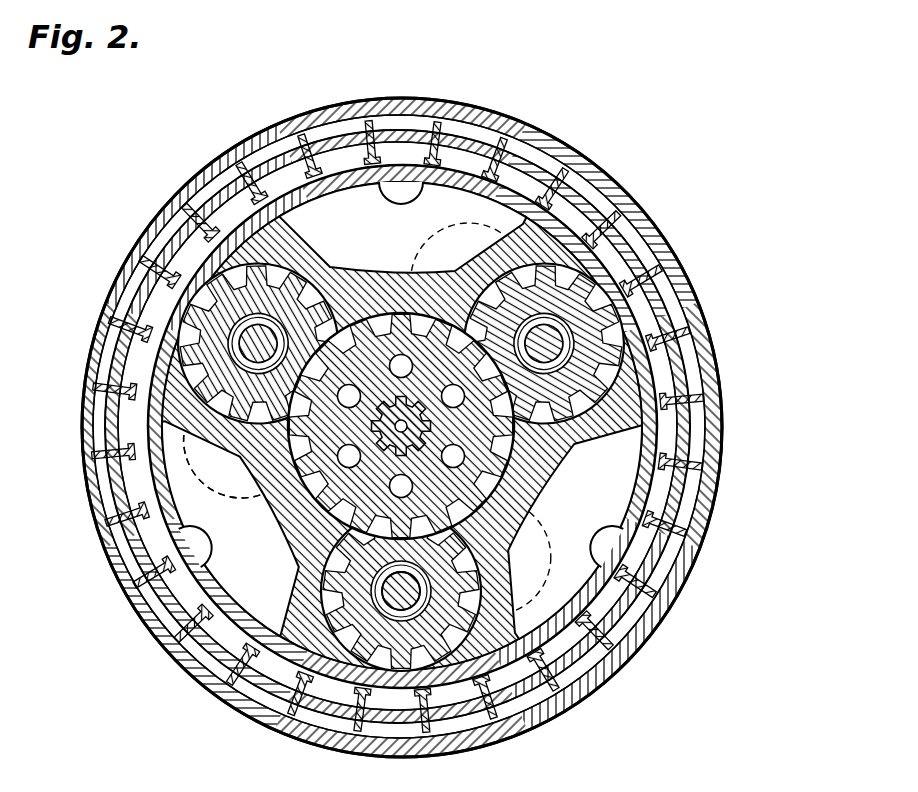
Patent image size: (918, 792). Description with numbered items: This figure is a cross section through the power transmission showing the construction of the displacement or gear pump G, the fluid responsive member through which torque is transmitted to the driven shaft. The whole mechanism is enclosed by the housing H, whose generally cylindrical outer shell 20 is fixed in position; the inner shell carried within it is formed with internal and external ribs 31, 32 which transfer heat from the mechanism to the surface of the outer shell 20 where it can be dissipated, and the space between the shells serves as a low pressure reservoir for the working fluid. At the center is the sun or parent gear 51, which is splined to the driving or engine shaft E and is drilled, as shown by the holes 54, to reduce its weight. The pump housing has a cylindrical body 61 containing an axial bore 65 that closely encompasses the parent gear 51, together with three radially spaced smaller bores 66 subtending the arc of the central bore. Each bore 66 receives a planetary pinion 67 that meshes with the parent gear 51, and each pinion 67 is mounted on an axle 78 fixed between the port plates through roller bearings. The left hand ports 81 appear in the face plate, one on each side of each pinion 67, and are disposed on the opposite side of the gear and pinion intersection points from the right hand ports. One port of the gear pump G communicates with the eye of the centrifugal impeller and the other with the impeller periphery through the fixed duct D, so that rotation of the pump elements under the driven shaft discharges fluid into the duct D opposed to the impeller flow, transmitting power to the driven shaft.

The outer shell 20 is at (607, 163).
The external ribs 32 is at (655, 232).
The smaller bores 66 is at (605, 273).
The planetary pinion 67 is at (612, 330).
The cylindrical body 61 is at (805, 353).
The fluid passage or duct D is at (672, 416).
The axial bore 65 is at (572, 462).
The sun or parent gear 51 is at (553, 482).
The internal ribs 31 is at (660, 512).
The casing or housing H is at (692, 592).
The left hand ports 81 is at (428, 237).
The drilled holes 54 is at (401, 426).
The driving or engine shaft E is at (298, 543).
The axle 78 is at (385, 611).
The displacement or gear pump G is at (130, 230).